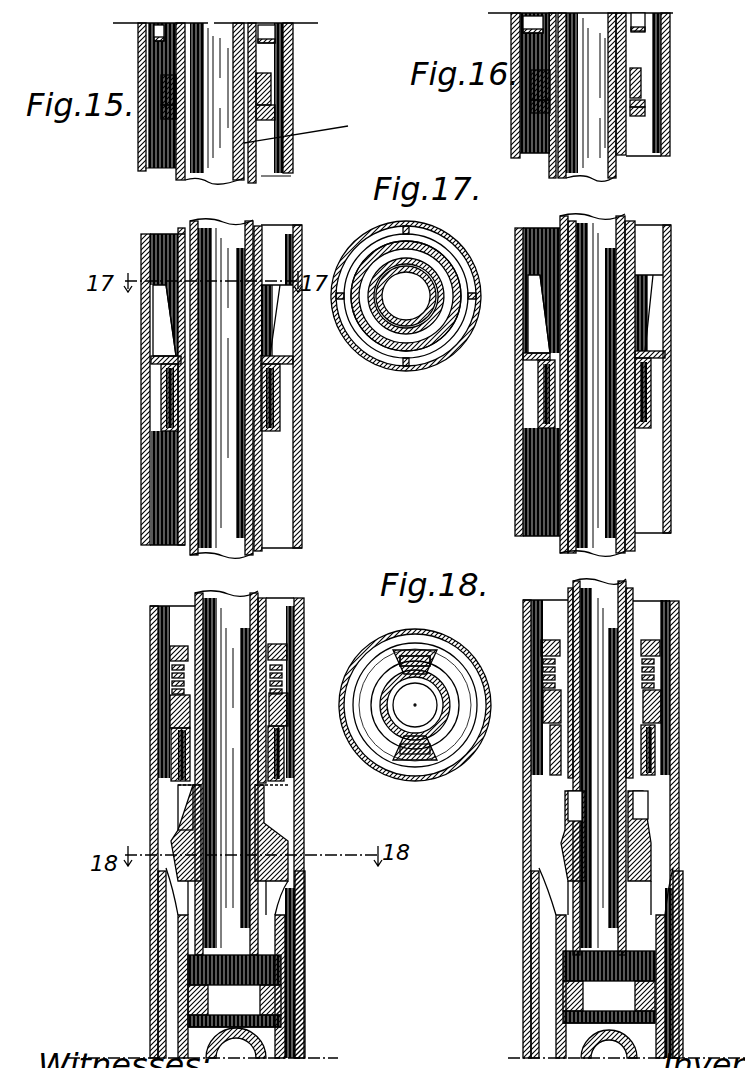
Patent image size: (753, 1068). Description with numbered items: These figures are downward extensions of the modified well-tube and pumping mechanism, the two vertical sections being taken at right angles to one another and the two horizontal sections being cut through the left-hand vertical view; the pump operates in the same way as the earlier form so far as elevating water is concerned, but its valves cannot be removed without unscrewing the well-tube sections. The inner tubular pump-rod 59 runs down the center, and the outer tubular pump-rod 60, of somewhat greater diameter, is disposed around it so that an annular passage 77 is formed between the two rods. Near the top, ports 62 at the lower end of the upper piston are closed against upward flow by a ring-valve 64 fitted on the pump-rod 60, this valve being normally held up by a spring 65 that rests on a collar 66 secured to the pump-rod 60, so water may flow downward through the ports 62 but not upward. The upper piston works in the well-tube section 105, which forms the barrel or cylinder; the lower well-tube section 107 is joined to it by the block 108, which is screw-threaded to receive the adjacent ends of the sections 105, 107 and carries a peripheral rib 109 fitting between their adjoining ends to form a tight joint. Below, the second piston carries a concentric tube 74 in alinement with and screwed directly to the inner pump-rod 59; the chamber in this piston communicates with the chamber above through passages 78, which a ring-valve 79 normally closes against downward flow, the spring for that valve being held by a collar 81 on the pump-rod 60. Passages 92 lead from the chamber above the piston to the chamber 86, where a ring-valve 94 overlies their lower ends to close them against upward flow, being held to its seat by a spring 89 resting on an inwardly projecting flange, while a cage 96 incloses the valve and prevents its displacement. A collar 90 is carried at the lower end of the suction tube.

In FIG. 15, the inner tubular pump-rod 59 is at (215, 175).
In FIG. 16, the inner tubular pump-rod 59 is at (600, 170).
In FIG. 17, the inner tubular pump-rod 59 is at (398, 318).
In FIG. 18, the inner tubular pump-rod 59 is at (430, 720).
In FIG. 15, the outer tubular pump-rod 60 is at (248, 118).
In FIG. 16, the outer tubular pump-rod 60 is at (618, 148).
In FIG. 17, the outer tubular pump-rod 60 is at (392, 318).
In FIG. 15, the ports 62 is at (267, 32).
In FIG. 16, the ports 62 is at (637, 22).
In FIG. 15, the ring-valve 64 is at (263, 77).
In FIG. 16, the ring-valve 64 is at (633, 65).
In FIG. 15, the spring 65 is at (267, 100).
In FIG. 16, the spring 65 is at (637, 96).
In FIG. 16, the collar 66 is at (637, 103).
In FIG. 15, the concentric tube 74 is at (260, 868).
In FIG. 16, the concentric tube 74 is at (645, 843).
In FIG. 18, the concentric tube 74 is at (380, 740).
In FIG. 15, the annular passage 77 is at (310, 129).
In FIG. 15, the passages 78 is at (272, 740).
In FIG. 16, the passages 78 is at (647, 740).
In FIG. 15, the ring-valve 79 is at (276, 700).
In FIG. 16, the ring-valve 79 is at (653, 700).
In FIG. 15, the collar 81 is at (279, 645).
In FIG. 16, the collar 81 is at (650, 635).
In FIG. 15, the chamber 86 is at (252, 958).
In FIG. 16, the chamber 86 is at (632, 955).
In FIG. 15, the spring 89 is at (262, 1005).
In FIG. 16, the spring 89 is at (640, 985).
In FIG. 15, the collar 90 is at (274, 670).
In FIG. 16, the collar 90 is at (648, 665).
In FIG. 15, the passages 92 is at (262, 900).
In FIG. 16, the passages 92 is at (657, 890).
In FIG. 18, the passages 92 is at (418, 745).
In FIG. 15, the ring-valve 94 is at (240, 992).
In FIG. 16, the ring-valve 94 is at (610, 980).
In FIG. 15, the cage 96 is at (270, 1040).
In FIG. 16, the cage 96 is at (630, 1030).
In FIG. 15, the well-tube section 105 is at (285, 143).
In FIG. 16, the well-tube section 105 is at (662, 138).
In FIG. 15, the lower well-tube section 107 is at (294, 507).
In FIG. 16, the lower well-tube section 107 is at (663, 478).
In FIG. 17, the lower well-tube section 107 is at (440, 240).
In FIG. 18, the lower well-tube section 107 is at (455, 645).
In FIG. 15, the block 108 is at (277, 352).
In FIG. 16, the block 108 is at (660, 350).
In FIG. 17, the block 108 is at (438, 328).
In FIG. 15, the peripheral rib 109 is at (280, 312).
In FIG. 16, the peripheral rib 109 is at (660, 300).